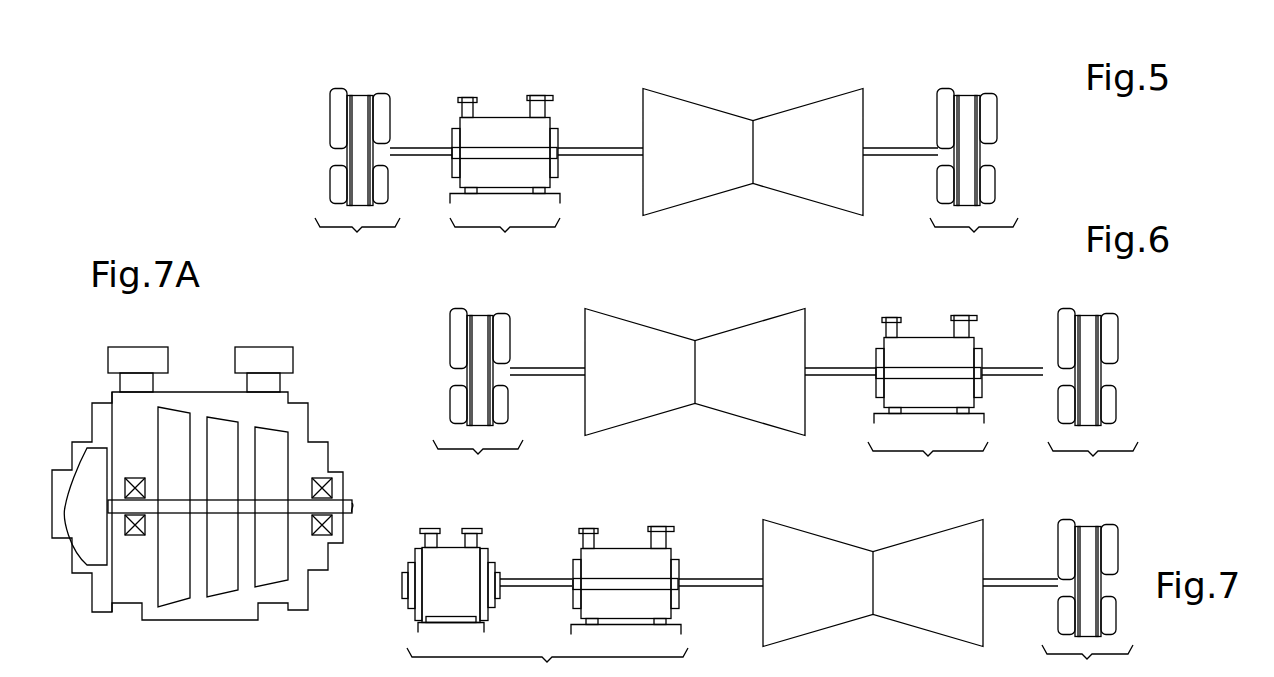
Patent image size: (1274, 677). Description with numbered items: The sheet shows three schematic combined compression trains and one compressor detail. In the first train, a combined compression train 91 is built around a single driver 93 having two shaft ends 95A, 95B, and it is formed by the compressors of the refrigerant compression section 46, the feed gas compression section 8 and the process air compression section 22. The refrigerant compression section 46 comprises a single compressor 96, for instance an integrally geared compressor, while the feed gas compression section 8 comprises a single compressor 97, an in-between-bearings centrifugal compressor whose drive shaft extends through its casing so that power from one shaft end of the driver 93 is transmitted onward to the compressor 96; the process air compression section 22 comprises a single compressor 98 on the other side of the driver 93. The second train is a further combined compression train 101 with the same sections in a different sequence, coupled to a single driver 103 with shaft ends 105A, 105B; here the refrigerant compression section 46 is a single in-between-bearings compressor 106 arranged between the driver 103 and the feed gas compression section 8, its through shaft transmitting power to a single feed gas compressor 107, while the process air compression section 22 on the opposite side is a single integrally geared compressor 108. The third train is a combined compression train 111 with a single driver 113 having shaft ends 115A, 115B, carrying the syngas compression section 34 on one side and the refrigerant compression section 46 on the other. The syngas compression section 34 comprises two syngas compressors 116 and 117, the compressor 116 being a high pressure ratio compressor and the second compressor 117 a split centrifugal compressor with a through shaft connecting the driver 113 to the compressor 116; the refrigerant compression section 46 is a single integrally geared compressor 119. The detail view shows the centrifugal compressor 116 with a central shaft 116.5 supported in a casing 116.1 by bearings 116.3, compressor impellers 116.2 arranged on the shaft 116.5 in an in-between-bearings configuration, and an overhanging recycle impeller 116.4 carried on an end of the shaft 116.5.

In FIG. 5, the combined compression train 91 is at (305, 96).
In FIG. 5, the compressor 96 is at (360, 100).
In FIG. 5, the compressor 97 is at (503, 125).
In FIG. 5, the shaft end 95A is at (615, 150).
In FIG. 5, the single driver 93 is at (710, 125).
In FIG. 5, the shaft end 95B is at (912, 150).
In FIG. 5, the compressor 98 is at (966, 98).
In FIG. 5, the refrigerant compression section 46 is at (357, 235).
In FIG. 6, the refrigerant compression section 46 is at (928, 458).
In FIG. 7, the refrigerant compression section 46 is at (1087, 660).
In FIG. 5, the feed gas compression section 8 is at (505, 235).
In FIG. 6, the feed gas compression section 8 is at (1093, 458).
In FIG. 5, the process air compression section 22 is at (974, 235).
In FIG. 6, the process air compression section 22 is at (478, 456).
In FIG. 6, the combined compression train 101 is at (435, 340).
In FIG. 6, the integrally geared compressor 108 is at (480, 323).
In FIG. 6, the shaft end 105A is at (556, 371).
In FIG. 6, the single driver 103 is at (640, 345).
In FIG. 6, the shaft end 105B is at (815, 369).
In FIG. 6, the compressor 106 is at (912, 342).
In FIG. 6, the feed gas compressor 107 is at (1088, 322).
In FIG. 7, the combined compression train 111 is at (1198, 513).
In FIG. 7, the syngas compressor 116 is at (442, 560).
In FIG. 7A, the syngas compressor 116 is at (322, 393).
In FIG. 7, the central shaft 116.5 is at (537, 582).
In FIG. 7A, the central shaft 116.5 is at (300, 507).
In FIG. 7, the syngas compressor 117 is at (622, 560).
In FIG. 7, the shaft end 115A is at (745, 580).
In FIG. 7, the single driver 113 is at (826, 560).
In FIG. 7, the shaft end 115B is at (1025, 580).
In FIG. 7, the compressor 119 is at (1090, 540).
In FIG. 7, the syngas compression section 34 is at (547, 662).
In FIG. 7A, the casing 116.1 is at (270, 597).
In FIG. 7A, the compressor impellers 116.2 is at (258, 580).
In FIG. 7A, the bearings 116.3 is at (133, 480).
In FIG. 7A, the recycle impeller 116.4 is at (85, 520).